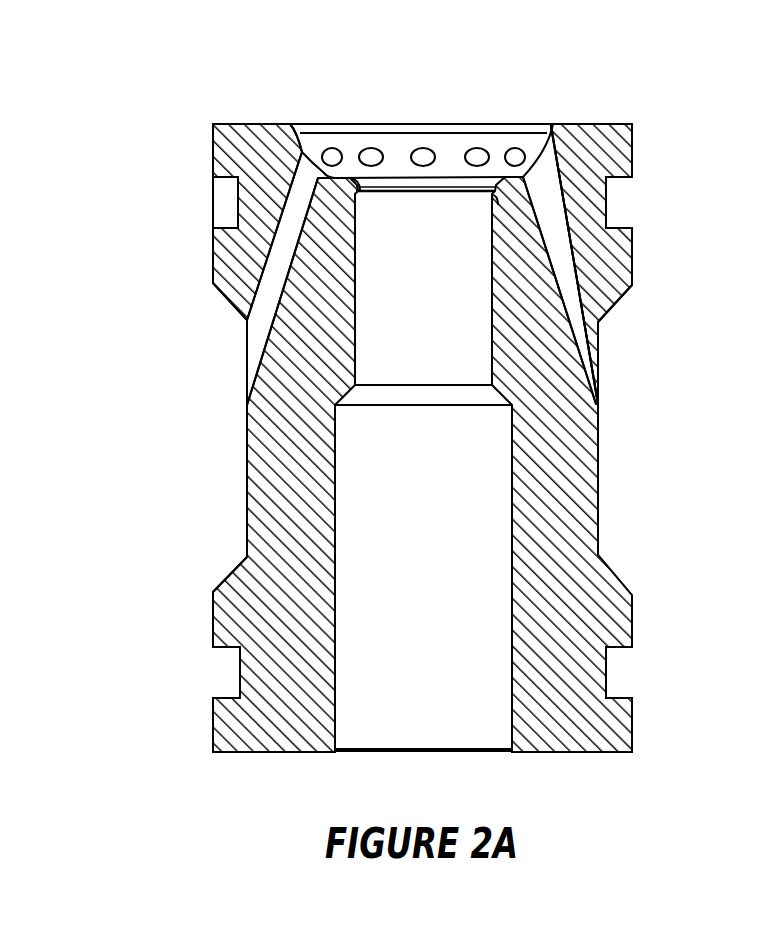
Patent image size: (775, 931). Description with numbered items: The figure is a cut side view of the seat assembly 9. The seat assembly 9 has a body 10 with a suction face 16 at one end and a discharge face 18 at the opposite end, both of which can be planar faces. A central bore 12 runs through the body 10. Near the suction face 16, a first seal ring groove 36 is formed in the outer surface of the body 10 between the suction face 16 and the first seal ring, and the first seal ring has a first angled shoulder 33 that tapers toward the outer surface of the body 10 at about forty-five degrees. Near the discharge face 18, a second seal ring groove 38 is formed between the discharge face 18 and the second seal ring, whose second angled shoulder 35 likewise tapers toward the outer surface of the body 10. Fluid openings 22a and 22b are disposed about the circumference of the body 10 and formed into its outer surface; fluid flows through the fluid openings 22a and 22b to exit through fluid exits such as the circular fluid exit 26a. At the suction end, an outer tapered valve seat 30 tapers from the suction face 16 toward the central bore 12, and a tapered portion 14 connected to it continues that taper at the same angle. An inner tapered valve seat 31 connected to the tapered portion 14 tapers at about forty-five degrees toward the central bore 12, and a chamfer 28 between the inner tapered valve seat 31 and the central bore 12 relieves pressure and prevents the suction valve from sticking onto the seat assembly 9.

The seat assembly 9 is at (216, 72).
The body 10 is at (600, 487).
The central bore 12 is at (422, 758).
The tapered portion 14 is at (548, 133).
The suction face 16 is at (593, 123).
The discharge face 18 is at (258, 753).
The fluid opening 22a is at (245, 366).
The fluid opening 22b is at (601, 366).
The circular fluid exit 26a is at (422, 146).
The chamfer 28 is at (494, 201).
The outer tapered valve seat 30 is at (553, 128).
The inner tapered valve seat 31 is at (353, 181).
The first angled shoulder 33 is at (230, 300).
The second angled shoulder 35 is at (240, 572).
The first seal ring groove 36 is at (607, 202).
The second seal ring groove 38 is at (606, 668).